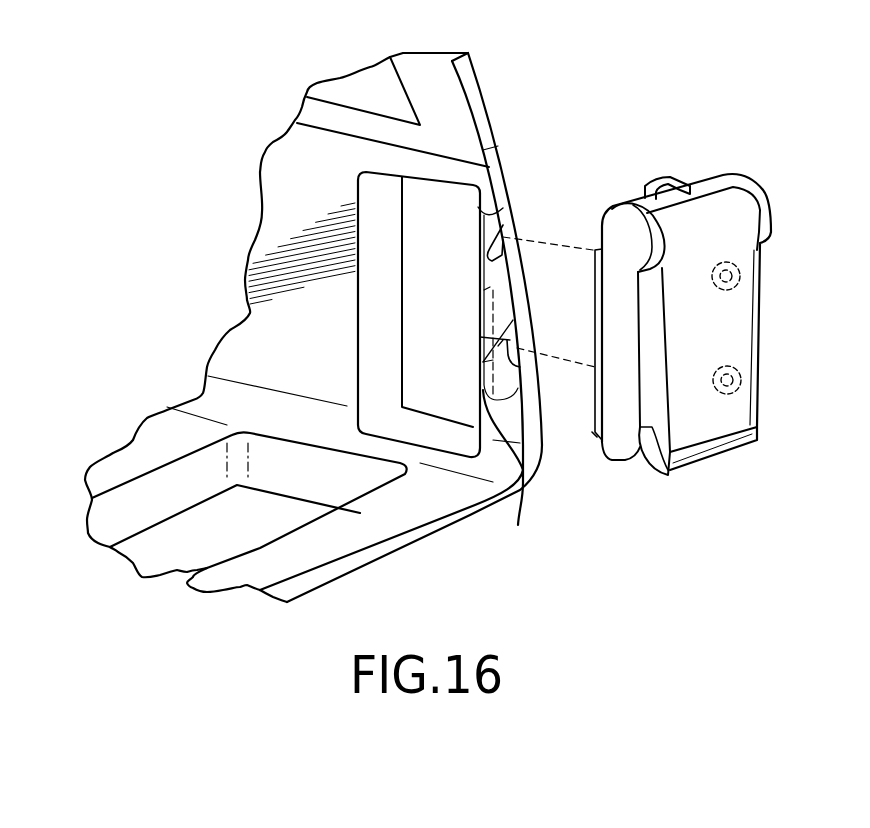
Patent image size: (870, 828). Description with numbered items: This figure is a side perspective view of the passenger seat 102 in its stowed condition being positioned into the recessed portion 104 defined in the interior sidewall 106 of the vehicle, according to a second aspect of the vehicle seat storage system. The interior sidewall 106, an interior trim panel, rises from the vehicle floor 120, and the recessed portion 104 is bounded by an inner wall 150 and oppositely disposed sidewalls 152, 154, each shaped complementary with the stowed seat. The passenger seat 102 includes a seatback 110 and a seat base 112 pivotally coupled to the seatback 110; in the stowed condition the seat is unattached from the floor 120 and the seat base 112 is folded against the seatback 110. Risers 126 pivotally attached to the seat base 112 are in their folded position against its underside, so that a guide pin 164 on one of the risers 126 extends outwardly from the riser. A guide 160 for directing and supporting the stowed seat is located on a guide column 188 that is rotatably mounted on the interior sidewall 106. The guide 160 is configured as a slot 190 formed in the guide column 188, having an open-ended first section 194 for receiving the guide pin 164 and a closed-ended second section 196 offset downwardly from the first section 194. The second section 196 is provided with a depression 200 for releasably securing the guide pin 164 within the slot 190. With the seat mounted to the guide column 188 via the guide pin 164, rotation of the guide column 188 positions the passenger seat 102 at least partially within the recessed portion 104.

The passenger seat 102 is at (657, 515).
The recessed portion 104 is at (357, 187).
The interior sidewall 106 is at (277, 167).
The seatback 110 is at (693, 430).
The seat base 112 is at (620, 445).
The floor 120 is at (397, 513).
The risers 126 is at (590, 418).
The inner wall 150 is at (443, 200).
The sidewall 152 is at (477, 413).
The sidewall 154 is at (360, 340).
The guide 160 is at (497, 350).
The guide pin 164 is at (741, 276).
The guide column 188 is at (490, 287).
The slot 190 is at (497, 240).
The first section 194 is at (503, 340).
The second section 196 is at (487, 363).
The depression 200 is at (520, 518).